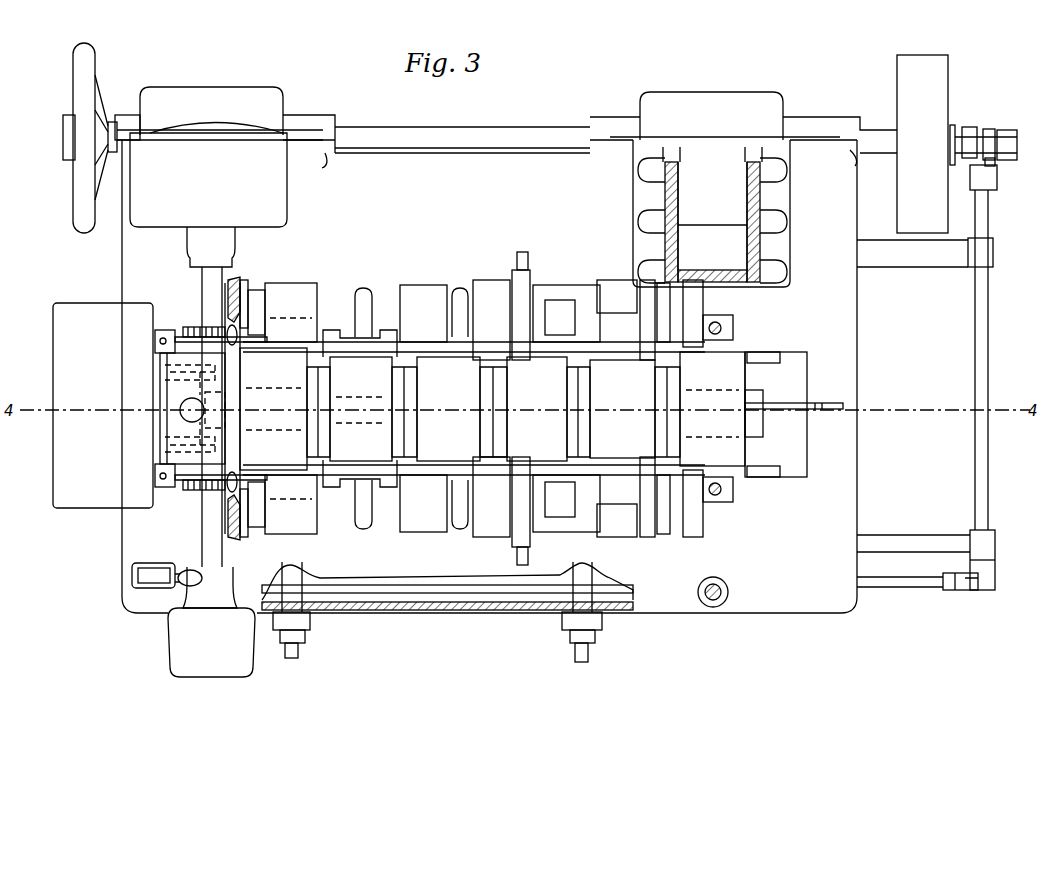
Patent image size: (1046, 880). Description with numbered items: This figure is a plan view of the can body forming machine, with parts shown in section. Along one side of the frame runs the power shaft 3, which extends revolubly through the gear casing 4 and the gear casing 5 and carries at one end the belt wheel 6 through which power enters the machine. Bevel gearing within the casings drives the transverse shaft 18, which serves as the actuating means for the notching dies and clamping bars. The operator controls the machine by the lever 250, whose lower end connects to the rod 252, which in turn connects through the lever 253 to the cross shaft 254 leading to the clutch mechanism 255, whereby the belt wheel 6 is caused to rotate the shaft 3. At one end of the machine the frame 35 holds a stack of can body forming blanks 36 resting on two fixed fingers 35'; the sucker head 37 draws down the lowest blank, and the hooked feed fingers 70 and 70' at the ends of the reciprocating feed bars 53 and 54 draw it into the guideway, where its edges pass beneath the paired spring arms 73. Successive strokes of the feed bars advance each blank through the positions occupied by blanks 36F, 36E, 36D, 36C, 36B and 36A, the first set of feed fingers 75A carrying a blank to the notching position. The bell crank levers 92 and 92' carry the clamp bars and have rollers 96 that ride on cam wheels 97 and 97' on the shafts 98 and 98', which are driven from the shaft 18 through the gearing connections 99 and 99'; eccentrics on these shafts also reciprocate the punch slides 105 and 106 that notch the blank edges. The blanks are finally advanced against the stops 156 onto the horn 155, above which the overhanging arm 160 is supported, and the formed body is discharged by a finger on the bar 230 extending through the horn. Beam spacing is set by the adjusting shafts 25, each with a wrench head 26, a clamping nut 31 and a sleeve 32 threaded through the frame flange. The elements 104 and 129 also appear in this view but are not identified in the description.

The gear casing 5 is at (127, 110).
The power shaft 3 is at (366, 128).
The gear casing 4 is at (742, 100).
The belt wheel 6 is at (905, 68).
The clutch mechanism 255 is at (978, 128).
The overhanging arm 160 is at (757, 253).
The cross shaft 254 is at (990, 350).
The rod 252 is at (905, 582).
The lever 253 is at (970, 588).
The shaft 18 is at (205, 540).
The lever 250 is at (160, 582).
The frame 35 is at (186, 408).
The fixed fingers 35' is at (139, 410).
The hooked feed finger 70' is at (166, 376).
The hooked feed finger 70 is at (165, 447).
The sucker head 37 is at (178, 405).
The can body forming blanks 36 is at (165, 425).
The gearing connection 99' is at (214, 306).
The gearing connection 99 is at (212, 511).
The spring arms 73 is at (285, 355).
The blank 36F is at (273, 409).
The blank 36E is at (361, 409).
The blank 36D is at (448, 409).
The blank 36C is at (537, 409).
The blank 36B is at (622, 409).
The blank 36A is at (712, 409).
The feed bar 54 is at (478, 365).
The feed bar 53 is at (535, 468).
The bracket 104 is at (380, 458).
The punch slide 106 is at (372, 290).
The punch slide 105 is at (362, 522).
The bell crank lever 92' is at (495, 302).
The bell crank lever 92 is at (489, 515).
The rollers 96 is at (523, 255).
The cam wheel 97' is at (566, 313).
The cam wheel 97 is at (566, 506).
The shaft 98' is at (591, 284).
The shaft 98 is at (623, 540).
The horn 155 is at (760, 395).
The stops 156 is at (750, 355).
The first set of feed fingers 75A is at (845, 405).
The bar 230 is at (818, 412).
The adjusting shaft 25 is at (286, 572).
The plate 129 is at (355, 587).
The sleeve 32 is at (310, 622).
The nut 31 is at (305, 640).
The head 26 is at (298, 655).